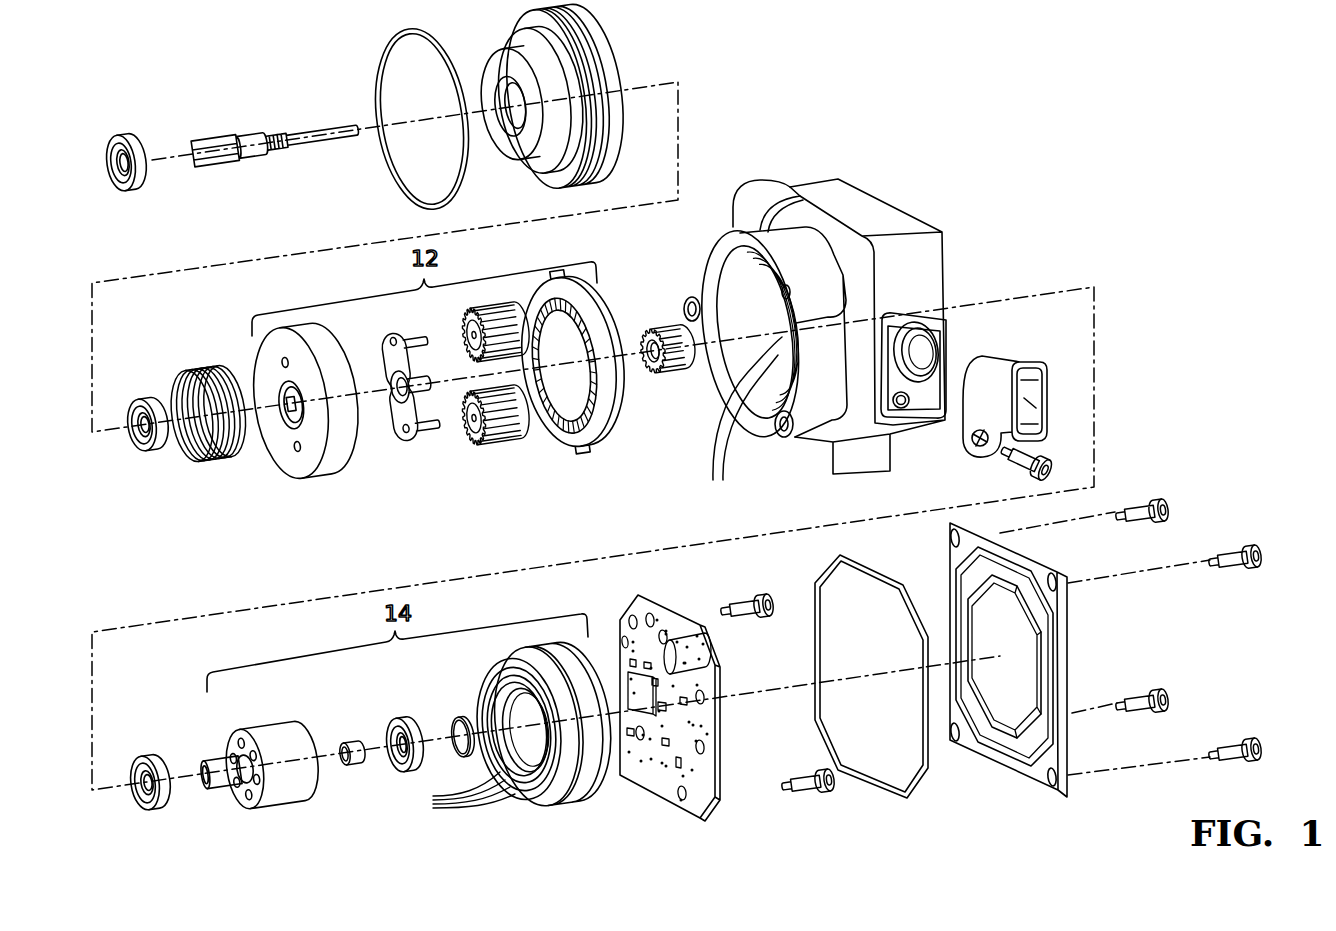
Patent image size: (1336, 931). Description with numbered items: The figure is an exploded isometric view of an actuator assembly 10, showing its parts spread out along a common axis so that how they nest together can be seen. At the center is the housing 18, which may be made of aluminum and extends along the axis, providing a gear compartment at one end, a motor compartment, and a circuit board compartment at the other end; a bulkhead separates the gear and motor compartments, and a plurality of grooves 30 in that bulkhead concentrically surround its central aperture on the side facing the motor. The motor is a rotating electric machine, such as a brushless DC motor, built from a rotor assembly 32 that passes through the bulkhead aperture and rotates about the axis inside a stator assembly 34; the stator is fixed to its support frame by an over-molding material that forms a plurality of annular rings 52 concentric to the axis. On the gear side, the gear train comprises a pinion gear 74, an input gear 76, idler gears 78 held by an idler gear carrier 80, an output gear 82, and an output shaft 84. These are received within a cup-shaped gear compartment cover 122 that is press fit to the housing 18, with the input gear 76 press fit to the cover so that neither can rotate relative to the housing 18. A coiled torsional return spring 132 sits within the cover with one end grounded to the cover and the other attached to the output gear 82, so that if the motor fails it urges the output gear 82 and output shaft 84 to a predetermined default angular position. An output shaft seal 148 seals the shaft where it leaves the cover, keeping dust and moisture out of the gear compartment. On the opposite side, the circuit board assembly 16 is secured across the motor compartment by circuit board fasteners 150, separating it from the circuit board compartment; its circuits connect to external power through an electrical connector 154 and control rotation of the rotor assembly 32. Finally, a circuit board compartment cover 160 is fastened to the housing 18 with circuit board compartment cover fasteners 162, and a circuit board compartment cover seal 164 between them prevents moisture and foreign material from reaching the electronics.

The actuator assembly 10 is at (995, 106).
The circuit board assembly 16 is at (655, 795).
The housing 18 is at (810, 372).
The grooves 30 is at (744, 421).
The rotor assembly 32 is at (258, 730).
The stator assembly 34 is at (503, 812).
The annular rings 52 is at (458, 793).
The pinion gear 74 is at (676, 372).
The input gear 76 is at (600, 427).
The idler gears 78 is at (484, 443).
The idler gear carrier 80 is at (400, 430).
The output gear 82 is at (297, 478).
The output shaft 84 is at (252, 128).
The gear compartment cover 122 is at (604, 58).
The return spring 132 is at (205, 458).
The output shaft seal 148 is at (123, 133).
The circuit board fasteners 150 is at (808, 775).
The electrical connector 154 is at (1010, 363).
The circuit board compartment cover 160 is at (1068, 790).
The circuit board compartment cover fasteners 162 is at (1220, 748).
The circuit board compartment cover seal 164 is at (922, 787).